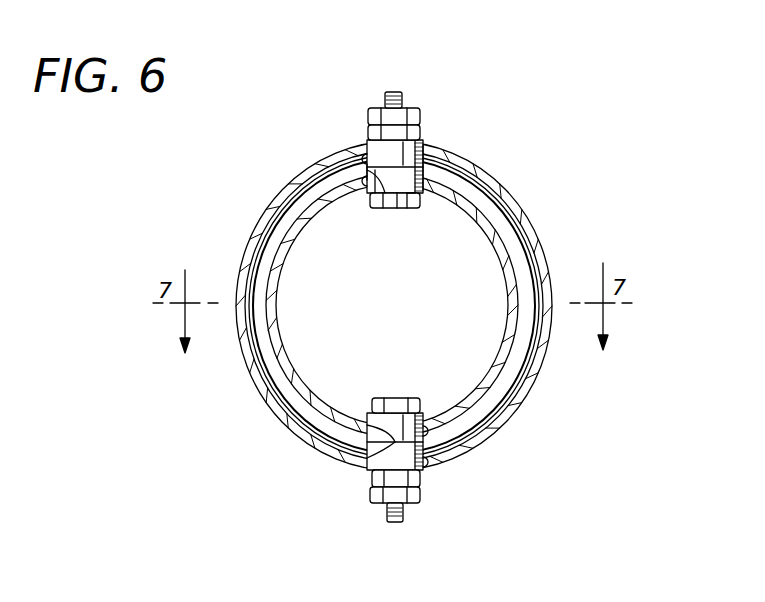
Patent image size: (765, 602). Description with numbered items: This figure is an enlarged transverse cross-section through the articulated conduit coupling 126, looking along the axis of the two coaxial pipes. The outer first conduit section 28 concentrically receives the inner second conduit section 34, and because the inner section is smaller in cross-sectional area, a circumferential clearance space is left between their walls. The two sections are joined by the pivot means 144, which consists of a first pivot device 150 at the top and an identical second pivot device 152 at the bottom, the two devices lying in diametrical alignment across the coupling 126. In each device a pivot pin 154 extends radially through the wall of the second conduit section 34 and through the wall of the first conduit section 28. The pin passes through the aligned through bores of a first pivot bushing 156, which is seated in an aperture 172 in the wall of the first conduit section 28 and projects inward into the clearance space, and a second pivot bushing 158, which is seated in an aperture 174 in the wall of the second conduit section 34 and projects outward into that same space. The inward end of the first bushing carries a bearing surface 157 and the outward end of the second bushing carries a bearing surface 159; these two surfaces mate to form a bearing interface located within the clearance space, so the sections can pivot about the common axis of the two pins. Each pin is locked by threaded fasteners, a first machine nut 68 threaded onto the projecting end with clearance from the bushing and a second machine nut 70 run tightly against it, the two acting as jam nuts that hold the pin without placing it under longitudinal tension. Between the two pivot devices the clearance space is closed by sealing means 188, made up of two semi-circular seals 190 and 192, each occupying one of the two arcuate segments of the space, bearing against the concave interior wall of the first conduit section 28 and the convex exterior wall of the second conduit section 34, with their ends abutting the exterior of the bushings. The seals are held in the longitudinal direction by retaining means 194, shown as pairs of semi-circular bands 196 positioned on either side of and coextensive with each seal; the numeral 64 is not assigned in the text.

The first conduit section 28 is at (547, 255).
The second conduit section 34 is at (273, 343).
The lower nut 64 is at (397, 208).
The first machine nut 68 is at (423, 150).
The second machine nut 70 is at (388, 90).
The articulated conduit coupling 126 is at (610, 93).
The pivot means 144 is at (510, 83).
The first pivot device 150 is at (470, 67).
The second pivot device 152 is at (437, 493).
The pivot pin 154 is at (398, 108).
The first pivot bushing 156 is at (425, 150).
The bearing surface 157 is at (375, 195).
The second pivot bushing 158 is at (415, 205).
The bearing surface 159 is at (370, 160).
The aperture 172 is at (360, 158).
The aperture 174 is at (358, 197).
The sealing means 188 is at (275, 197).
The semi-circular seal 190 is at (265, 242).
The semi-circular seal 192 is at (492, 198).
The retaining means 194 is at (505, 378).
The semi-circular band 196 is at (260, 280).